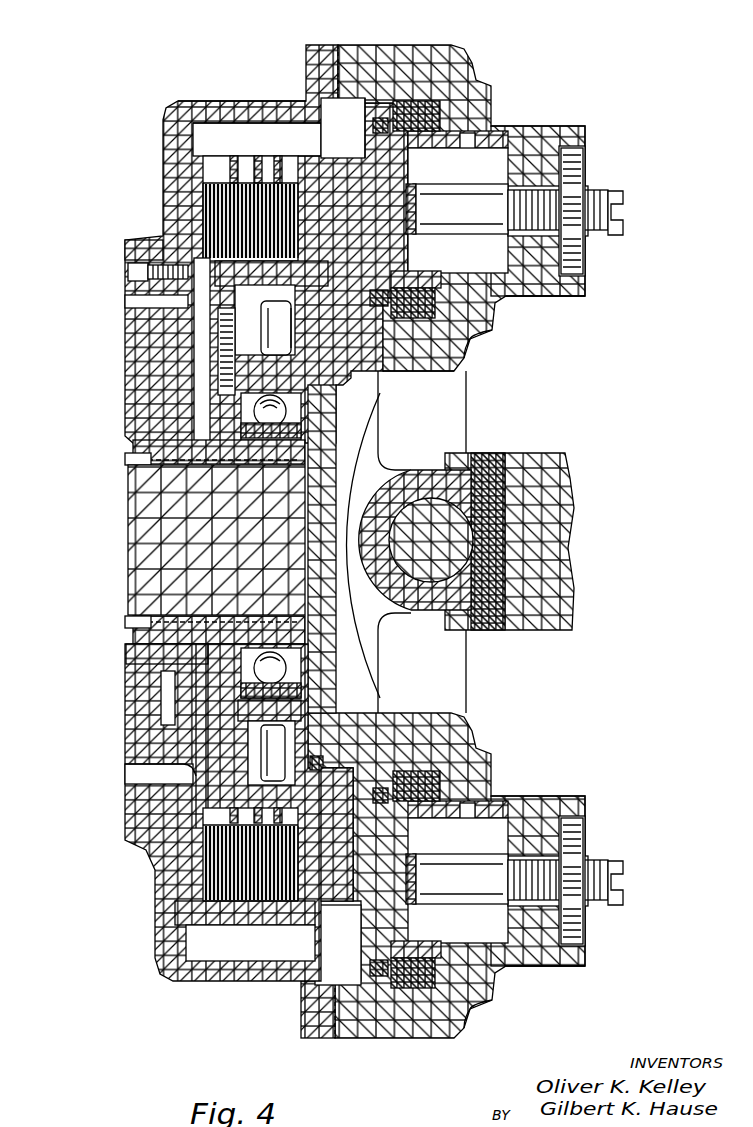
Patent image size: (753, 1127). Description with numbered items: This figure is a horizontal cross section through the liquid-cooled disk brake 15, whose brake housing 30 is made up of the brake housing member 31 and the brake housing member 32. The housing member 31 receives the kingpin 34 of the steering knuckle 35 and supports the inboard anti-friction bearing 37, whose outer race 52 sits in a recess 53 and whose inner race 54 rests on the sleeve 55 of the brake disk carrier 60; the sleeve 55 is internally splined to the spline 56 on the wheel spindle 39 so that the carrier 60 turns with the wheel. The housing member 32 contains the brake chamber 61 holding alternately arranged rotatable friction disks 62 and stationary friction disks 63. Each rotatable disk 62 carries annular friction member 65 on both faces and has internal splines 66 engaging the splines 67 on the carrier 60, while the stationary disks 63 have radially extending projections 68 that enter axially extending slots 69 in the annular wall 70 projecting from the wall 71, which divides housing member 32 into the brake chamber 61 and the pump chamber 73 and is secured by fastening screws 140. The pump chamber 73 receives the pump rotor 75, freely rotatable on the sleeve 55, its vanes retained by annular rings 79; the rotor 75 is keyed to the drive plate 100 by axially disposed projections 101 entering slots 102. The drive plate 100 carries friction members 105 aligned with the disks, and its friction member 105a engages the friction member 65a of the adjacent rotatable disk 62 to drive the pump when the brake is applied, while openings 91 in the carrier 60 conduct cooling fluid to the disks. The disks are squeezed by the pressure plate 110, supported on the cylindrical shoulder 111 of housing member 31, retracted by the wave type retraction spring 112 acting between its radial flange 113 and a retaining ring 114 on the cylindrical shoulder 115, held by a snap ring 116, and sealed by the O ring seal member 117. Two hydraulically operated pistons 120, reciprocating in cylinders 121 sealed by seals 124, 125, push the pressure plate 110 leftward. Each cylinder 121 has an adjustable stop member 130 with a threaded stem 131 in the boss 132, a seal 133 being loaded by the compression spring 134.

The brake 15 is at (168, 100).
The brake housing 30 is at (240, 93).
The brake housing member 31 is at (447, 48).
The brake housing member 32 is at (245, 105).
The kingpin 34 is at (438, 570).
The steering knuckle 35 is at (553, 522).
The anti-friction bearing 37 is at (366, 385).
The wheel spindle 39 is at (135, 558).
The outer race 52 is at (290, 683).
The recess 53 is at (293, 695).
The inner race 54 is at (290, 425).
The sleeve 55 is at (125, 433).
The spline 56 is at (138, 462).
The brake disk carrier 60 is at (250, 323).
The brake chamber 61 is at (228, 122).
The rotatable friction disks 62 is at (240, 880).
The stationary friction disks 63 is at (270, 880).
The friction member 65 is at (262, 178).
The friction member 65a is at (210, 905).
The internal splines 66 is at (312, 265).
The splines 67 is at (325, 245).
The radially extending projections 68 is at (240, 168).
The axially extending slots 69 is at (282, 150).
The annular wall 70 is at (196, 950).
The wall 71 is at (145, 303).
The pump chamber 73 is at (130, 768).
The pump rotor 75 is at (140, 655).
The annular rings 79 is at (160, 697).
The openings 91 is at (305, 818).
The drive plate 100 is at (195, 245).
The axially disposed projections 101 is at (125, 645).
The slots 102 is at (160, 675).
The friction members 105 is at (195, 180).
The friction member 105a is at (195, 882).
The pressure plate 110 is at (352, 155).
The cylindrical shoulder 111 is at (372, 280).
The retraction spring 112 is at (272, 318).
The radial flange 113 is at (283, 335).
The retaining ring 114 is at (280, 746).
The cylindrical shoulder 115 is at (210, 715).
The snap ring 116 is at (255, 740).
The O ring seal member 117 is at (316, 756).
The hydraulically operated pistons 120 is at (357, 128).
The cylinders 121 is at (485, 140).
The seal 124 is at (388, 355).
The seal 125 is at (462, 336).
The stop member 130 is at (443, 184).
The threaded stem 131 is at (612, 188).
The boss 132 is at (572, 118).
The seal 133 is at (498, 289).
The compression spring 134 is at (446, 232).
The fastening screws 140 is at (122, 262).